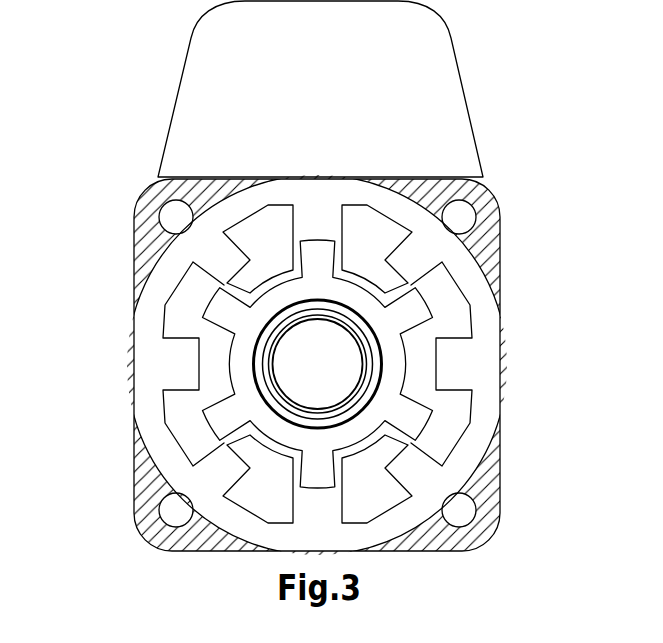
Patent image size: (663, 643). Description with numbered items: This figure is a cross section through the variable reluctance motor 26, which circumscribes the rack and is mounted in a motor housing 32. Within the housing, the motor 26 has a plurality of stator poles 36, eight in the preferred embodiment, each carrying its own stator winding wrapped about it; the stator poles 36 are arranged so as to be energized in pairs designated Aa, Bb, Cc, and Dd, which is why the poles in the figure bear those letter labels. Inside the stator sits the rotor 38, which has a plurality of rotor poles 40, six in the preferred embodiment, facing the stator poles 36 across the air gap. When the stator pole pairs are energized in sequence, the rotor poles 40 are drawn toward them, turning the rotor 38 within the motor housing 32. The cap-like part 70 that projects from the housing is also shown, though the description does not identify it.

The variable reluctance motor 26 is at (503, 315).
The motor housing 32 is at (502, 227).
The stator pole 36 is at (343, 227).
The rotor 38 is at (387, 353).
The rotor poles 40 is at (205, 312).
The cap 70 is at (423, 40).